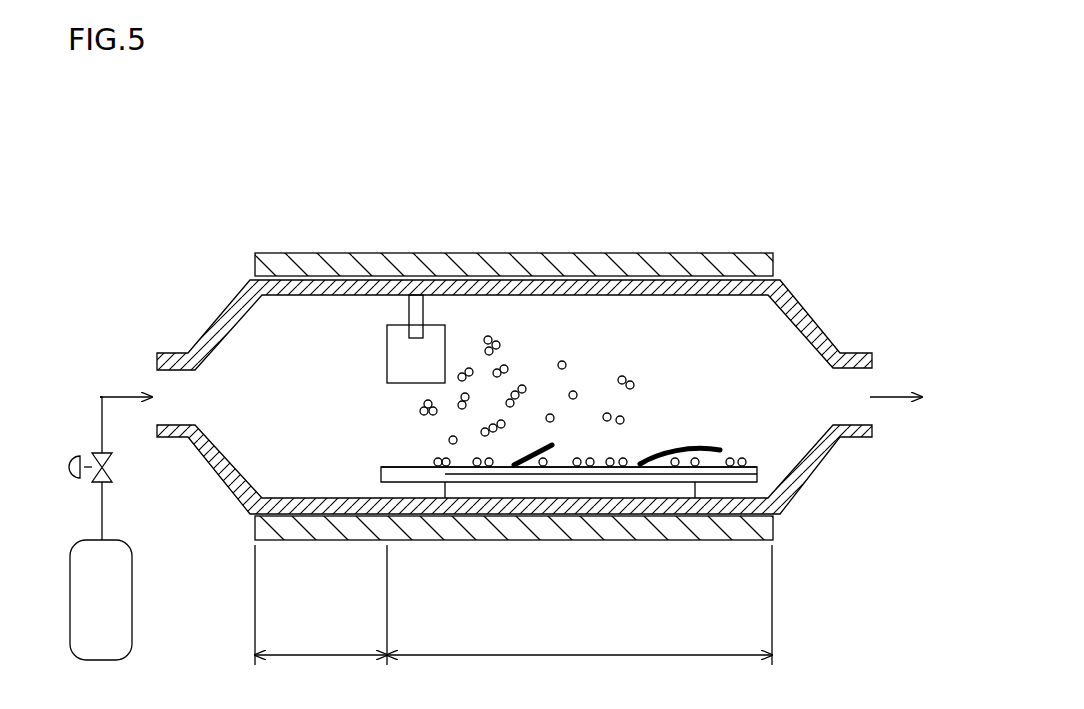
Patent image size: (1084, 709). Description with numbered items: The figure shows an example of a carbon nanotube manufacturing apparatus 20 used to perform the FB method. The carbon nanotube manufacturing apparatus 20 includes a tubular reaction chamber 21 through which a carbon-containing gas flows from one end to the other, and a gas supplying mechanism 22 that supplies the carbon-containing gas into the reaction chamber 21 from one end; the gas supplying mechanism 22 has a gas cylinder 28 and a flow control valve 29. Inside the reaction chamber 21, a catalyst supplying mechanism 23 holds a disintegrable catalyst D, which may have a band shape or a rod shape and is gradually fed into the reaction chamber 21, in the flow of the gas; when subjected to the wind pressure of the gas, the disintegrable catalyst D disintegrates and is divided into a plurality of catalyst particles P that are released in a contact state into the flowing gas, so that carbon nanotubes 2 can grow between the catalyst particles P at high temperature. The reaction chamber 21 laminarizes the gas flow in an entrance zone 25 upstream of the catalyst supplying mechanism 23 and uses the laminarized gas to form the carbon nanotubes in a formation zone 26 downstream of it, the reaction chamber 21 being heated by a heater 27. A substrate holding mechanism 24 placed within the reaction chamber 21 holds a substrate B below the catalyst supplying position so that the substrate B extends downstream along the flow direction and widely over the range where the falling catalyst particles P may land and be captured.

The carbon nanotube manufacturing apparatus 20 is at (806, 146).
The tubular reaction chamber 21 is at (743, 252).
The gas supplying mechanism 22 is at (100, 383).
The catalyst supplying mechanism 23 is at (425, 318).
The substrate holding mechanism 24 is at (368, 483).
The entrance zone 25 is at (321, 605).
The formation zone 26 is at (579, 605).
The heater 27 is at (485, 541).
The gas cylinder 28 is at (133, 600).
The flow control valve 29 is at (112, 467).
The particle 2 is at (700, 466).
The catalyst particles P is at (561, 361).
The disintegrable catalyst D is at (398, 325).
The substrate B is at (727, 483).